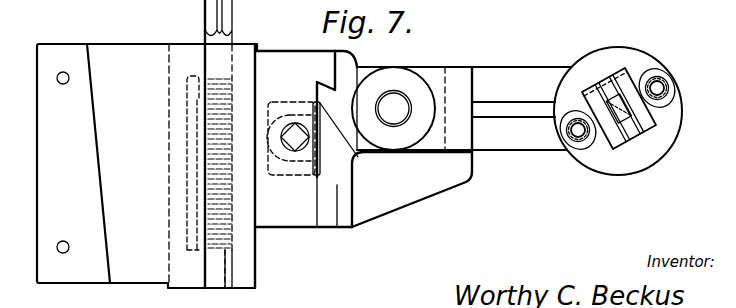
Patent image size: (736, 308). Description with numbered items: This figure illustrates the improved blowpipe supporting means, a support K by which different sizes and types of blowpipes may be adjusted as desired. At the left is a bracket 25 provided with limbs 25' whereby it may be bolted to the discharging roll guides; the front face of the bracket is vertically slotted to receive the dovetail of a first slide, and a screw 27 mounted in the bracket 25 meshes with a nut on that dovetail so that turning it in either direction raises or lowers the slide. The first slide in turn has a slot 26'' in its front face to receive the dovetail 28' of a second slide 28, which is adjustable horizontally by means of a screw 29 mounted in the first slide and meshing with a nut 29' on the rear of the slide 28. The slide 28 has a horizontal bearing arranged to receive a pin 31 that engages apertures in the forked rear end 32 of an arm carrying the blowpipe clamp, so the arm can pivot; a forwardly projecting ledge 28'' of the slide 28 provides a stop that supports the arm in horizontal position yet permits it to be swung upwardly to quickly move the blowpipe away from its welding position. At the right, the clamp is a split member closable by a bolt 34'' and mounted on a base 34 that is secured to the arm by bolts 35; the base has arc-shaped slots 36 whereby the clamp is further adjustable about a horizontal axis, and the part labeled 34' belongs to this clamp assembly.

The bracket 25 is at (147, 154).
The limbs 25' is at (114, 163).
The screw 27 is at (205, 22).
The support K is at (300, 224).
The slot 26'' is at (359, 115).
The nut 29' is at (292, 122).
The screw 29 is at (287, 165).
The dovetail 28' is at (329, 220).
The second slide 28 is at (409, 195).
The forwardly projecting ledge 28'' is at (425, 199).
The pin 31 is at (393, 97).
The forked rear end 32 is at (455, 72).
The base 34 is at (634, 129).
The circular head 34' is at (618, 125).
The bolt 34'' is at (663, 124).
The bolts 35 is at (663, 82).
The arc-shaped slots 36 is at (644, 68).